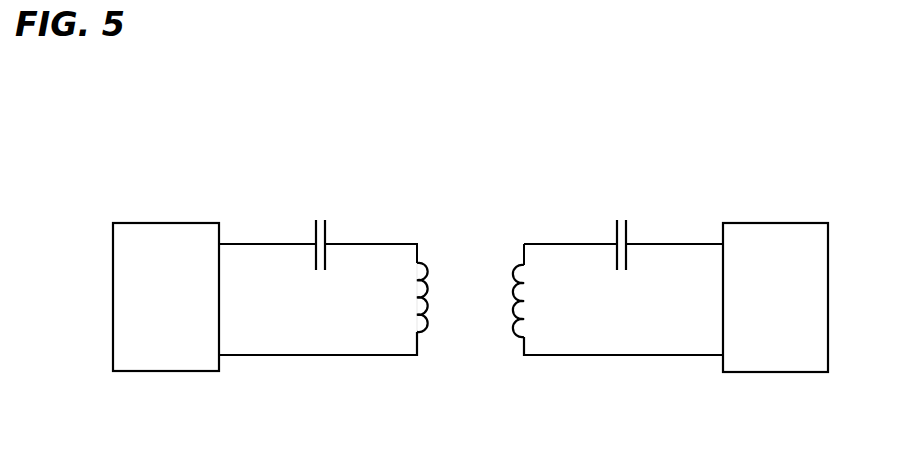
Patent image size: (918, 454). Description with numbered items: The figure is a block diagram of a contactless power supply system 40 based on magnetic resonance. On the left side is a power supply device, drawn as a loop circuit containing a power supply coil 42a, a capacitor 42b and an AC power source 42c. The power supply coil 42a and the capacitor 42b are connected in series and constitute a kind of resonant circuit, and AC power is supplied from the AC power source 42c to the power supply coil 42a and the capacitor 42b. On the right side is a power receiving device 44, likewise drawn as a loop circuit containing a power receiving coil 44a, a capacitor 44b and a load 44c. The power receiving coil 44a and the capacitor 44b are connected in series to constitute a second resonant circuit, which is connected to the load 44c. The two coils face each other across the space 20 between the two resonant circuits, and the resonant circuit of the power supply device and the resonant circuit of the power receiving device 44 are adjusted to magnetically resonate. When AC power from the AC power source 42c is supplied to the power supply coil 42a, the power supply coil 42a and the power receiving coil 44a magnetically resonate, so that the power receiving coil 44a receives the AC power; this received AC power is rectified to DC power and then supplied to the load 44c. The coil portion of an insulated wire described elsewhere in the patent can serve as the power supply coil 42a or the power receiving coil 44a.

The contactless power supply system 40 is at (263, 192).
The gap / coupling region 20 is at (410, 203).
The power receiving device 44 is at (662, 155).
The power supply coil 42a is at (428, 327).
The capacitor 42b is at (327, 228).
The AC power source 42c is at (175, 373).
The power receiving coil 44a is at (517, 268).
The capacitor 44b is at (627, 228).
The load 44c is at (779, 222).